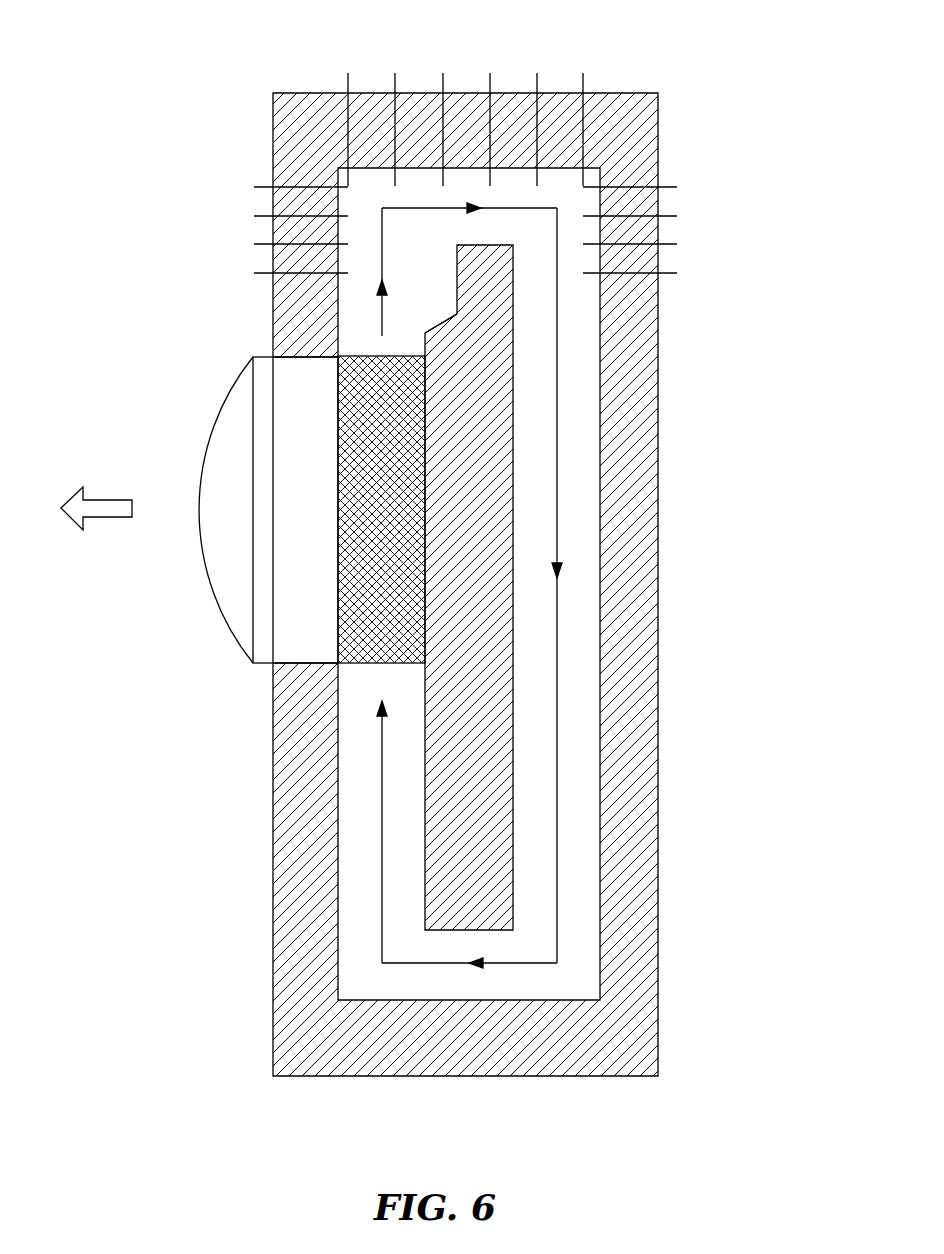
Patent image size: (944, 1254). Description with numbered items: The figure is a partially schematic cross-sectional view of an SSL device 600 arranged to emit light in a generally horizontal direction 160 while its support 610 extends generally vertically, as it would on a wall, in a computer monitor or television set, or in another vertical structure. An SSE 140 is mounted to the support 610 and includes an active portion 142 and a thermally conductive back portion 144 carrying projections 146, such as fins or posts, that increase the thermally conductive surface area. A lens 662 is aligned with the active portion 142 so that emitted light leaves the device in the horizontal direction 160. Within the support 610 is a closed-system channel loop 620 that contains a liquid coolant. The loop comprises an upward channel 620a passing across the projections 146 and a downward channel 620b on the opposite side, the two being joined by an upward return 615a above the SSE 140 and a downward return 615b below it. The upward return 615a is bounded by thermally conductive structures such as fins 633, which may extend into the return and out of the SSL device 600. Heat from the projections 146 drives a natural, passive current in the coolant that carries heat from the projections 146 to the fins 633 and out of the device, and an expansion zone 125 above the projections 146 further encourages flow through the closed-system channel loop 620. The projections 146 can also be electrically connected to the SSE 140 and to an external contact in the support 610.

The SSL device 600 is at (158, 199).
The support 610 is at (288, 290).
The fins 633 is at (442, 82).
The upward return 615a is at (517, 180).
The downward return 615b is at (372, 982).
The closed-system channel loop 620 is at (469, 582).
The upward channel 620a is at (358, 832).
The downward channel 620b is at (572, 793).
The projections 146 is at (398, 488).
The expansion zone 125 is at (446, 299).
The SSE 140 is at (290, 553).
The active portion 142 is at (287, 650).
The thermally conductive back portion 144 is at (367, 637).
The lens 662 is at (225, 597).
The horizontal direction 160 is at (105, 519).